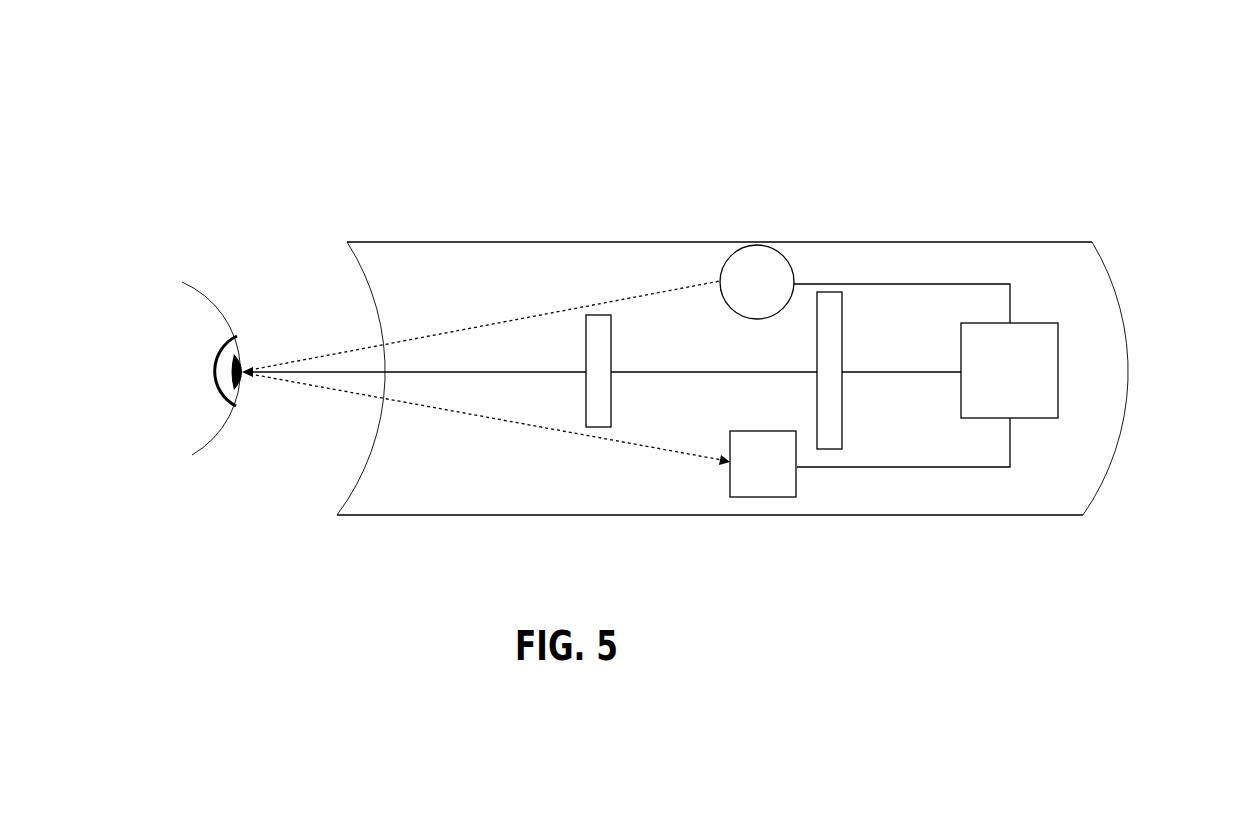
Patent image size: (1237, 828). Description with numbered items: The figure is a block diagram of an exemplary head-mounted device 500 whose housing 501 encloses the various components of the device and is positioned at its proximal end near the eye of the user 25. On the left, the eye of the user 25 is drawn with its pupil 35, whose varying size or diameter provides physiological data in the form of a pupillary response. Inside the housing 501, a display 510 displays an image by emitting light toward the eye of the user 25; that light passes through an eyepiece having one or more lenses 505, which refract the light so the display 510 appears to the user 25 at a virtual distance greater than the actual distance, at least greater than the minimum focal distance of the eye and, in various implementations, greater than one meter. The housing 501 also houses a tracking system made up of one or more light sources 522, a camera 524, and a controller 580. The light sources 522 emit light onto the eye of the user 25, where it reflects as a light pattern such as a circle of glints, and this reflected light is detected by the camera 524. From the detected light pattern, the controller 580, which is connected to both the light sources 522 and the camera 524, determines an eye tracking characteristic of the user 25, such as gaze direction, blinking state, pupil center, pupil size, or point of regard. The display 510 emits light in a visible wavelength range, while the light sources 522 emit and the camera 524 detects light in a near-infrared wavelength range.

The head-mounted device 500 is at (410, 136).
The housing 501 is at (893, 515).
The user 25 is at (208, 296).
The pupil 35 is at (239, 354).
The lenses 505 is at (597, 315).
The light sources 522 is at (749, 247).
The display 510 is at (842, 357).
The controller 580 is at (1058, 375).
The camera 524 is at (762, 497).